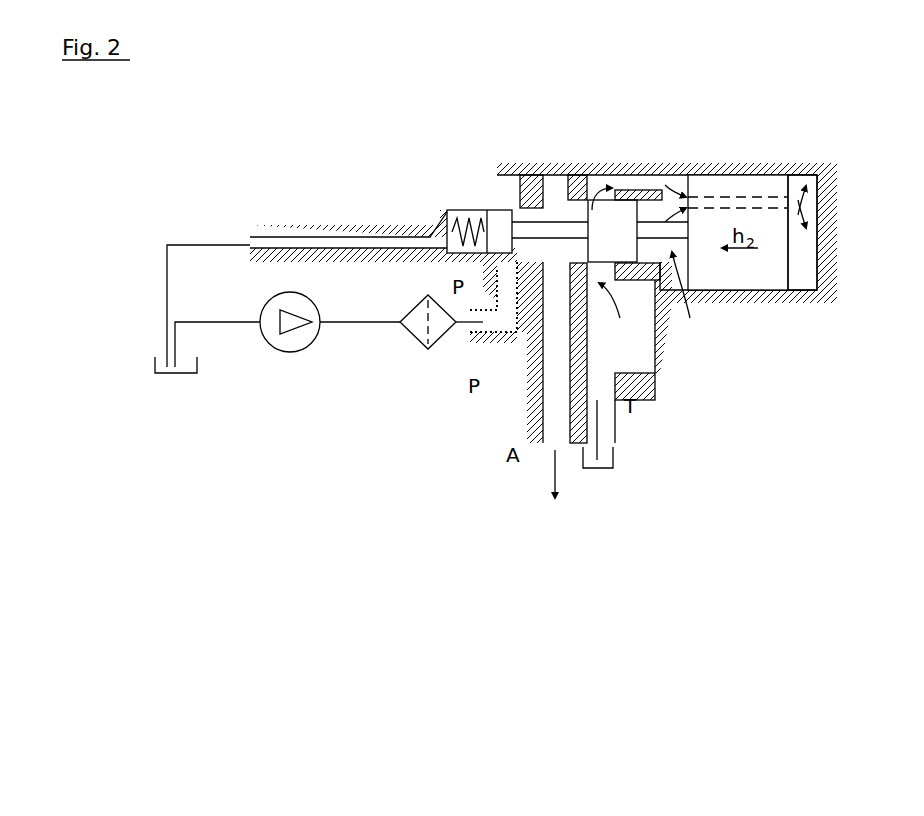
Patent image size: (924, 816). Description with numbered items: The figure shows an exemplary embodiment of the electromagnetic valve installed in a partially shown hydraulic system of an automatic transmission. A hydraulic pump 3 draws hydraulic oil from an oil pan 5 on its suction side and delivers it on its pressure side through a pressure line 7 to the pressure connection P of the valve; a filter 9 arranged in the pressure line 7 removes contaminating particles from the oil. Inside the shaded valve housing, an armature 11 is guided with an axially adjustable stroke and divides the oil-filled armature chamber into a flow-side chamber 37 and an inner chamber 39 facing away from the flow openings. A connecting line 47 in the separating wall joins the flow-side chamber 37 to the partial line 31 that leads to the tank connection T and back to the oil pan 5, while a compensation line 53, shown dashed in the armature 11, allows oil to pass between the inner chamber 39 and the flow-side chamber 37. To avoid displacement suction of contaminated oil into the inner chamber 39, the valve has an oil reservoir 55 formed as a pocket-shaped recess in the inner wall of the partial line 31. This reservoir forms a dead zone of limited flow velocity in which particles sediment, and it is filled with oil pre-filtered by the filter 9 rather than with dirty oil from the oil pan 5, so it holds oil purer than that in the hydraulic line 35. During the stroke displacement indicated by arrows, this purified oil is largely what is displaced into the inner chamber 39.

The hydraulic pump 3 is at (297, 352).
The oil pan 5 is at (168, 375).
The pressure line 7 is at (352, 328).
The filter 9 is at (413, 345).
The armature 11 is at (772, 186).
The partial line 31 is at (605, 393).
The hydraulic line 35 is at (492, 303).
The flow-side chamber 37 is at (696, 298).
The inner chamber 39 is at (800, 254).
The connecting line 47 is at (655, 176).
The compensation line 53 is at (722, 197).
The oil reservoir 55 is at (638, 350).